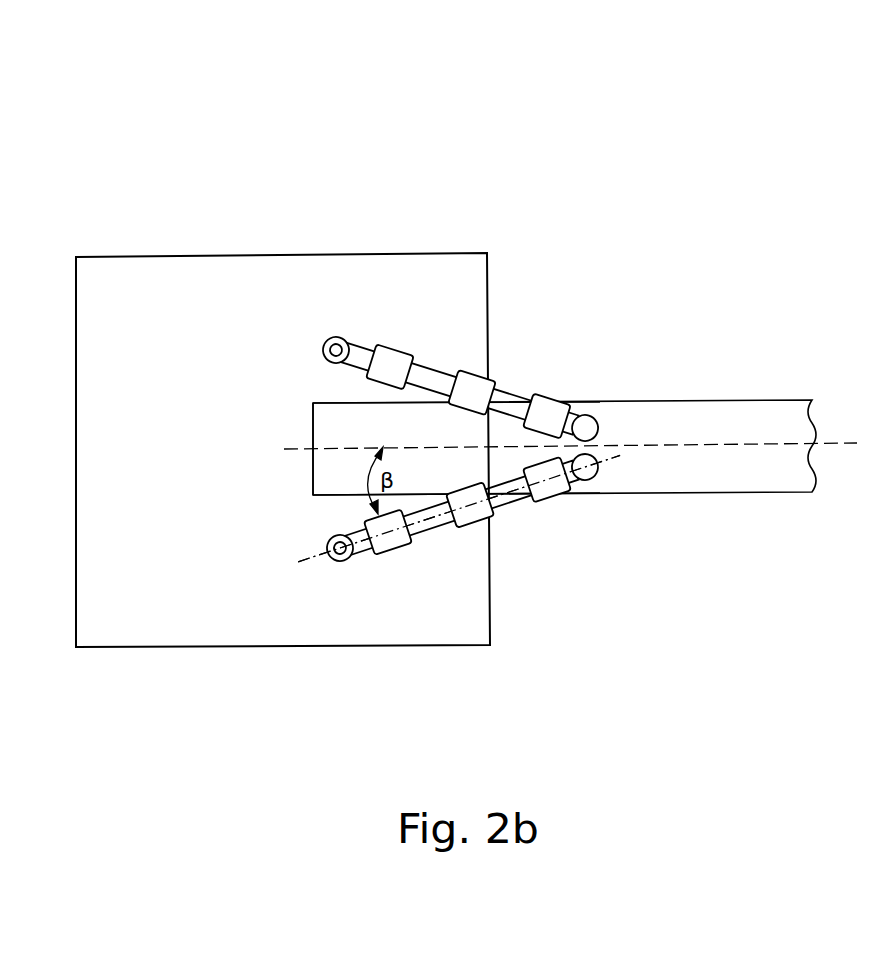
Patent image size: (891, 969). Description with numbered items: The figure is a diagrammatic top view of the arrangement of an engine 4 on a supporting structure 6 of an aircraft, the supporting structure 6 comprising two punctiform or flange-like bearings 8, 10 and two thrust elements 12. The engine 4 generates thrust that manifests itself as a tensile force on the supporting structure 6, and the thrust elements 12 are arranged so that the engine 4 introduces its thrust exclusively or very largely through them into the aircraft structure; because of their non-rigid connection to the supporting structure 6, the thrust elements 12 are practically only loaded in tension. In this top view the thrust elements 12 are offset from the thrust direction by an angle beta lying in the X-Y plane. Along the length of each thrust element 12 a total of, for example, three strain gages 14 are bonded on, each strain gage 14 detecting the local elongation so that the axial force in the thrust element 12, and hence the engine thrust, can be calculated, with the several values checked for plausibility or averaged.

The engine 4 is at (328, 118).
The supporting structure 6 is at (735, 478).
The bearing 8 is at (315, 455).
The bearing 10 is at (600, 445).
The thrust element 12 is at (513, 383).
The strain gage 14 is at (393, 360).